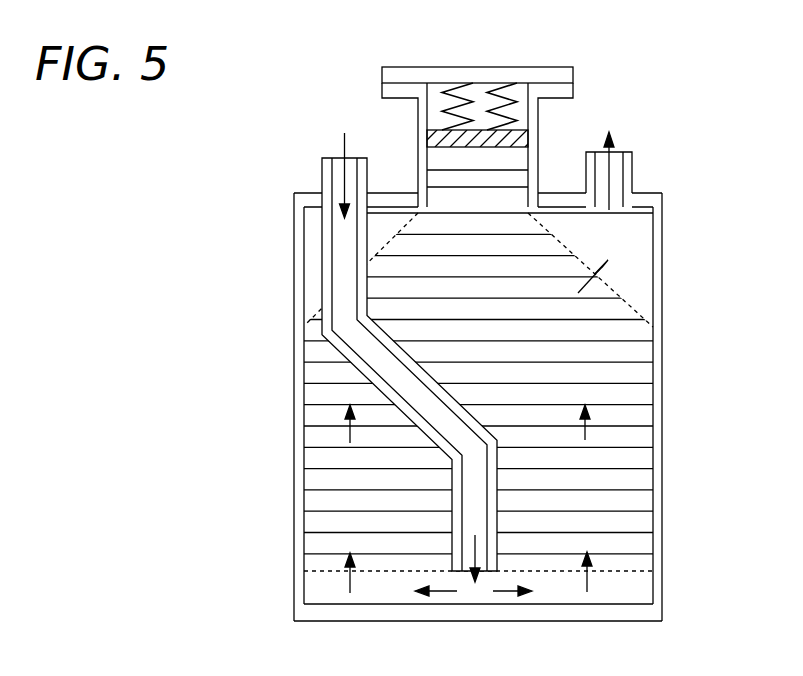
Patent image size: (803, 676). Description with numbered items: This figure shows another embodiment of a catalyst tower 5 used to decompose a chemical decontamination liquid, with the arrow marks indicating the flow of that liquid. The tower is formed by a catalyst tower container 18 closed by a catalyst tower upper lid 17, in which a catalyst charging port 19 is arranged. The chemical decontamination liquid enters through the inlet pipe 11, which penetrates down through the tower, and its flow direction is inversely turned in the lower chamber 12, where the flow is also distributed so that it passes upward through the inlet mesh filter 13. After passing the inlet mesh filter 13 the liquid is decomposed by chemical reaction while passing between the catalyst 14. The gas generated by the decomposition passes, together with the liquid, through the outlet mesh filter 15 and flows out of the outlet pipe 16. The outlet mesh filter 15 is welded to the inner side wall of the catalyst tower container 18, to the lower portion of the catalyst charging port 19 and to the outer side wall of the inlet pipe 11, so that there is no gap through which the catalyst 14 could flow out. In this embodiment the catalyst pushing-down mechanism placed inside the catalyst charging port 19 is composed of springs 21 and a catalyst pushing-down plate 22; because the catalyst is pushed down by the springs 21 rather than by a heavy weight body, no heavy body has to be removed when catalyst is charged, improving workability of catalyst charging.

The catalyst tower 5 is at (282, 347).
The inlet pipe 11 is at (322, 158).
The lower chamber 12 is at (320, 593).
The inlet mesh filter 13 is at (628, 570).
The catalyst 14 is at (640, 447).
The outlet mesh filter 15 is at (628, 300).
The outlet pipe 16 is at (632, 175).
The catalyst tower upper lid 17 is at (304, 193).
The catalyst tower container 18 is at (295, 452).
The catalyst charging port 19 is at (488, 67).
The springs 21 is at (527, 83).
The catalyst pushing-down plate 22 is at (520, 137).